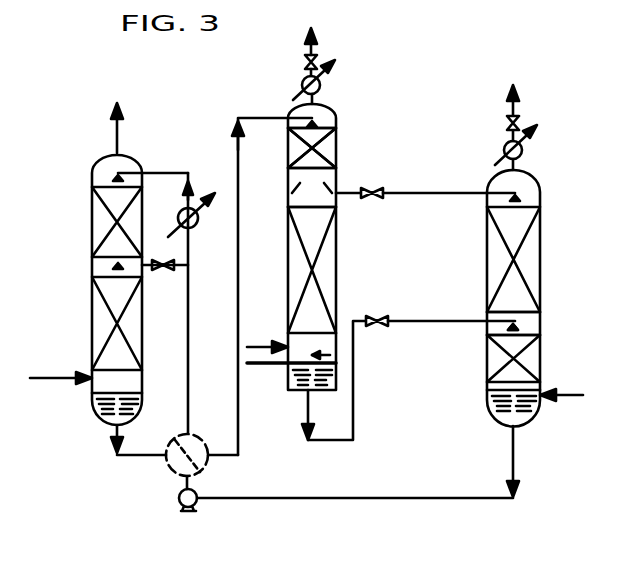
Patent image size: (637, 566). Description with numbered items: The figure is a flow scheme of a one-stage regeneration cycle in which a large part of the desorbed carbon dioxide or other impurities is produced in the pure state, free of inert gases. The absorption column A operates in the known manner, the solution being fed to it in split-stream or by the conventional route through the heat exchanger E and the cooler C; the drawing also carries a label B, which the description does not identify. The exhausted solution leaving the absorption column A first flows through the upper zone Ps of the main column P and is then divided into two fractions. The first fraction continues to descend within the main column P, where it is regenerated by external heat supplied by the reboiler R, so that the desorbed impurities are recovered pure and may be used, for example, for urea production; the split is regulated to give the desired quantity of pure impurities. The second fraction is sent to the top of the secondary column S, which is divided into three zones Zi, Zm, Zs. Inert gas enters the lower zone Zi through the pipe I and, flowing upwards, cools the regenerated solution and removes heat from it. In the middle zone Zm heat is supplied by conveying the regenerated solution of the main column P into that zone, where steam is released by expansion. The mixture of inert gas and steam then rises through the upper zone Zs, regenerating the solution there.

The absorption column A is at (109, 279).
The cooler C is at (193, 303).
The heat exchanger E is at (200, 441).
The pump B is at (339, 498).
The main column P is at (383, 234).
The upper zone of the main column Ps is at (298, 149).
The reboiler R is at (265, 336).
The secondary column S is at (523, 291).
The upper zone of the secondary column Zs is at (493, 259).
The middle zone of the secondary column Zm is at (492, 314).
The lower zone of the secondary column Zi is at (492, 359).
The pipe I is at (582, 390).